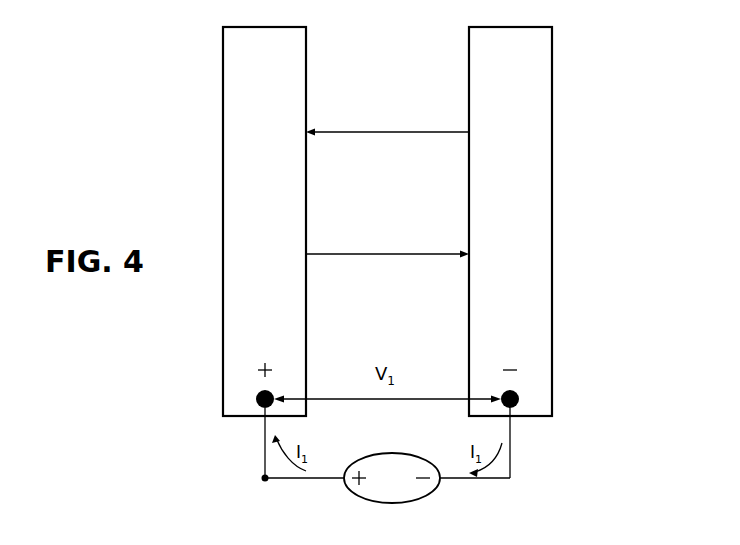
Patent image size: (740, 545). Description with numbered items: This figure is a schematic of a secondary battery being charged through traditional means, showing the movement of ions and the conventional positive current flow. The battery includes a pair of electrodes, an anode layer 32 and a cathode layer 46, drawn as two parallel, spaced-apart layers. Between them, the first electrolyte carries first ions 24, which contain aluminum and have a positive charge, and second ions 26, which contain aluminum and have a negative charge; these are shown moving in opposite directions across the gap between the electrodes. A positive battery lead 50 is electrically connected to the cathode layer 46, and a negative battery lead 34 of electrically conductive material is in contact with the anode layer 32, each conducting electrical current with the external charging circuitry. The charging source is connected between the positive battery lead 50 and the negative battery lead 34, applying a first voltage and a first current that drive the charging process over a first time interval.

The cathode layer 46 is at (268, 115).
The anode layer 32 is at (517, 119).
The second ions 26 is at (382, 132).
The first ions 24 is at (380, 254).
The positive battery lead 50 is at (253, 401).
The negative battery lead 34 is at (520, 400).